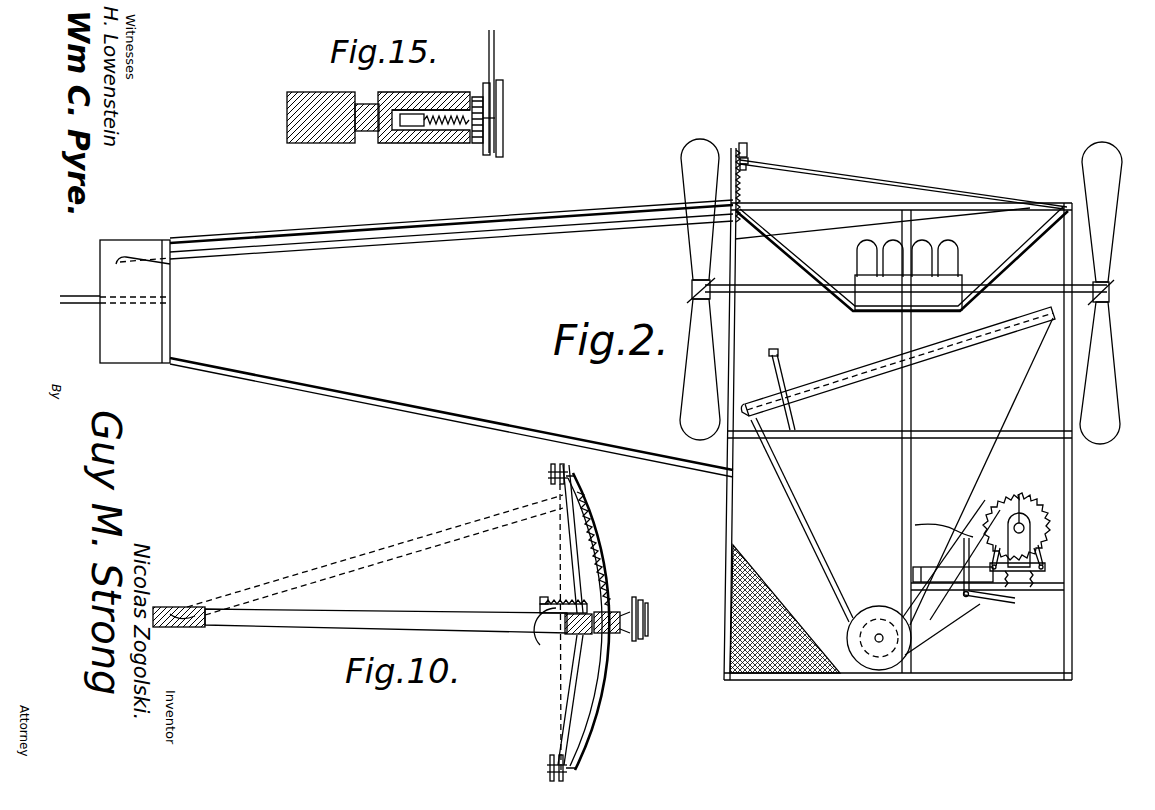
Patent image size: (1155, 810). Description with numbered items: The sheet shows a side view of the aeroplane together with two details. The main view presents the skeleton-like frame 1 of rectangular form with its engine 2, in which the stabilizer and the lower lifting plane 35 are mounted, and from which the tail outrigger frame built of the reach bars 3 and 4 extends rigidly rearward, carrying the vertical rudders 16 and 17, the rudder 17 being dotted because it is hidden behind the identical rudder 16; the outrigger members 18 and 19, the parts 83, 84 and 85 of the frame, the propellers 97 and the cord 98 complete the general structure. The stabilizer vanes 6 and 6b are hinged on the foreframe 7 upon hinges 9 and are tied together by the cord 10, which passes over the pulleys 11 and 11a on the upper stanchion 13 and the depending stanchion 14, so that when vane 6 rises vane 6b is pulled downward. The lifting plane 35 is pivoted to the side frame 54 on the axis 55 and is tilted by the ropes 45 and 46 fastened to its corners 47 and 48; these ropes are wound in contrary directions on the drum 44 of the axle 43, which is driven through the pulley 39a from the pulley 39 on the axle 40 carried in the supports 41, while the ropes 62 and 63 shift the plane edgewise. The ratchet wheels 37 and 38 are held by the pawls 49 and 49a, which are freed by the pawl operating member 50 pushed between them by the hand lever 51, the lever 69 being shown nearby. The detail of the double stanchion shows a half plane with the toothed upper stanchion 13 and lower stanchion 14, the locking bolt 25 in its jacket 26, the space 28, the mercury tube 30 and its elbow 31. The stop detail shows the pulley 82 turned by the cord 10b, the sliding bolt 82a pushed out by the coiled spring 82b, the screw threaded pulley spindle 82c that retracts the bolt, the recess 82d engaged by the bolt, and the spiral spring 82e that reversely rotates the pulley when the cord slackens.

In FIG. 2, the main frame 1 is at (938, 205).
In FIG. 2, the engine 2 is at (888, 473).
In FIG. 2, the reach bar 3 is at (470, 232).
In FIG. 2, the reach bar 4 is at (428, 410).
In FIG. 15, the vane 6 is at (320, 143).
In FIG. 2, the vane 6 is at (782, 163).
In FIG. 10, the vane 6 is at (372, 550).
In FIG. 2, the vane 6b is at (817, 240).
In FIG. 2, the foreframe 7 is at (1066, 205).
In FIG. 10, the foreframe 7 is at (160, 628).
In FIG. 10, the hinge 9 is at (186, 610).
In FIG. 2, the cord 10 is at (734, 150).
In FIG. 10, the cord 10 is at (562, 544).
In FIG. 15, the cord 10b is at (494, 43).
In FIG. 10, the cord 10b is at (638, 612).
In FIG. 2, the pulley 11 is at (745, 143).
In FIG. 10, the pulley 11 is at (570, 466).
In FIG. 10, the pulley 11a is at (545, 770).
In FIG. 2, the upper stanchion 13 is at (695, 172).
In FIG. 10, the upper stanchion 13 is at (598, 550).
In FIG. 2, the depending stanchion 14 is at (720, 228).
In FIG. 10, the depending stanchion 14 is at (586, 752).
In FIG. 2, the vertical rudder 16 is at (114, 240).
In FIG. 2, the vertical rudder 17 is at (138, 262).
In FIG. 2, the boom rod 18 is at (532, 242).
In FIG. 2, the boom rod 19 is at (515, 216).
In FIG. 10, the locking bolt 25 is at (610, 600).
In FIG. 10, the jacket 26 is at (548, 626).
In FIG. 2, the space 28 is at (751, 182).
In FIG. 2, the mercury tube 30 is at (760, 153).
In FIG. 10, the mercury tube 30 is at (535, 629).
In FIG. 2, the elbow 31 is at (748, 158).
In FIG. 10, the elbow 31 is at (540, 600).
In FIG. 2, the lifting plane 35 is at (845, 395).
In FIG. 2, the ratchet wheel 37 is at (1020, 495).
In FIG. 2, the ratchet wheel 38 is at (994, 525).
In FIG. 2, the pulley 39 is at (1050, 505).
In FIG. 2, the pulley 39a is at (880, 665).
In FIG. 2, the axle 40 is at (1035, 510).
In FIG. 2, the support 41 is at (1022, 538).
In FIG. 2, the axle 43 is at (877, 636).
In FIG. 2, the drum 44 is at (890, 652).
In FIG. 2, the rope 45 is at (792, 515).
In FIG. 2, the rope 46 is at (992, 468).
In FIG. 2, the corner 47 is at (748, 398).
In FIG. 2, the corner 48 is at (1030, 310).
In FIG. 2, the pawl 49 is at (1045, 560).
In FIG. 2, the pawl 49a is at (963, 512).
In FIG. 2, the pawl operating member 50 is at (1020, 600).
In FIG. 2, the hand lever 51 is at (953, 540).
In FIG. 2, the side frame 54 is at (912, 405).
In FIG. 2, the axis 55 is at (905, 360).
In FIG. 2, the rope 62 is at (808, 528).
In FIG. 2, the rope 63 is at (985, 472).
In FIG. 2, the hand lever 69 is at (772, 362).
In FIG. 15, the pulley 82 is at (503, 150).
In FIG. 10, the pulley 82 is at (646, 640).
In FIG. 15, the sliding bolt 82a is at (410, 98).
In FIG. 10, the sliding bolt 82a is at (618, 610).
In FIG. 15, the coiled spring 82b is at (435, 128).
In FIG. 15, the screw threaded pulley spindle 82c is at (478, 128).
In FIG. 15, the recess 82d is at (385, 143).
In FIG. 10, the recess 82d is at (572, 650).
In FIG. 15, the spiral spring 82e is at (486, 120).
In FIG. 2, the floor 83 is at (730, 522).
In FIG. 2, the bottom bar 84 is at (979, 697).
In FIG. 2, the shelf 85 is at (1066, 466).
In FIG. 2, the propeller 97 is at (700, 150).
In FIG. 2, the cable 98 is at (742, 603).
In FIG. 10, the cable 98 is at (699, 598).